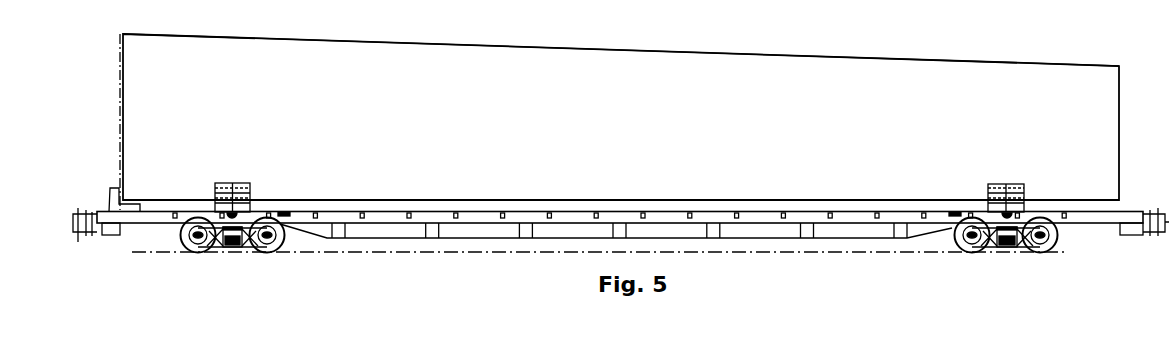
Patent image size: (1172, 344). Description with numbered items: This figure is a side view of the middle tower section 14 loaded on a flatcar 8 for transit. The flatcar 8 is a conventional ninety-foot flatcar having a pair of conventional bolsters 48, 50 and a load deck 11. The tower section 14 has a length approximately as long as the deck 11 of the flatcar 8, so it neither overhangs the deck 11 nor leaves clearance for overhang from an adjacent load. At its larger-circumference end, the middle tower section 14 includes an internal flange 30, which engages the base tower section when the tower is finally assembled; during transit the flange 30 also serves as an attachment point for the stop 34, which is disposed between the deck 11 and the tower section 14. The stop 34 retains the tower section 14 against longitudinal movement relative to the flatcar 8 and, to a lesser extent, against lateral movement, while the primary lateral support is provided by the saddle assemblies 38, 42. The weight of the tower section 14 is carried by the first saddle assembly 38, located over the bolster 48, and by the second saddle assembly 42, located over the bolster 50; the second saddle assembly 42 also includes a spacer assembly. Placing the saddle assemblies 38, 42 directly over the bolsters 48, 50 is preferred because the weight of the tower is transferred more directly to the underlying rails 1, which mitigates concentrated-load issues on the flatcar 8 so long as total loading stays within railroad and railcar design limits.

The rails 1 is at (838, 252).
The flatcar 8 is at (417, 240).
The load deck 11 is at (1127, 211).
The middle tower section 14 is at (628, 52).
The internal flange 30 is at (126, 84).
The stop 34 is at (113, 196).
The first saddle assembly 38 is at (251, 195).
The second saddle assembly 42 is at (988, 195).
The bolster 48 is at (233, 248).
The bolster 50 is at (1007, 248).